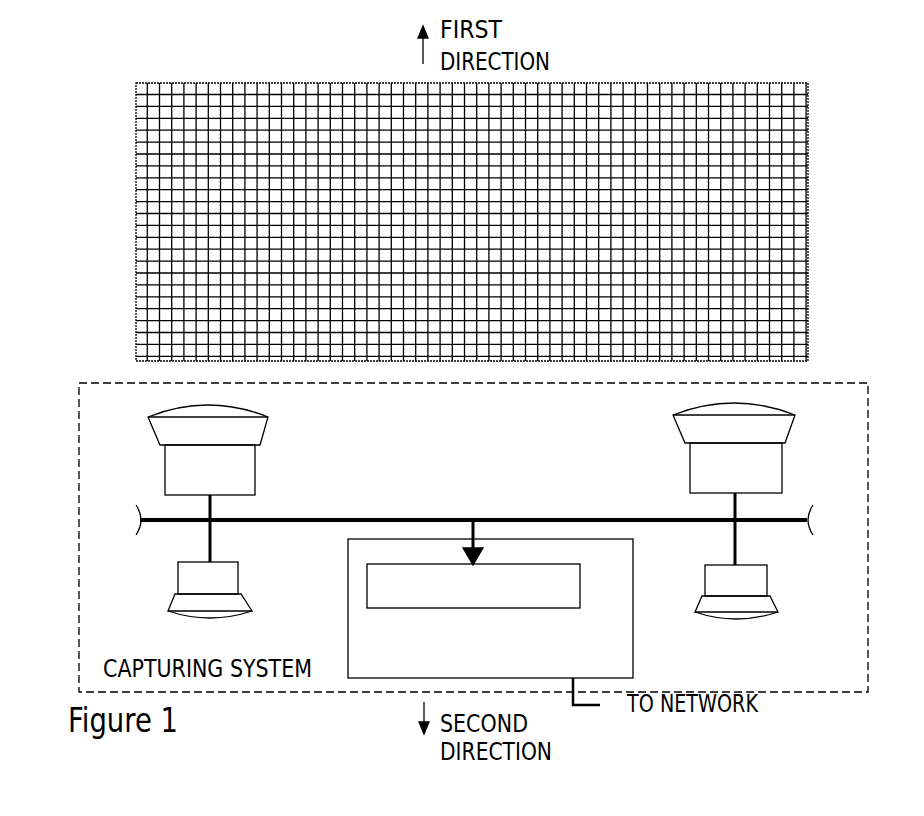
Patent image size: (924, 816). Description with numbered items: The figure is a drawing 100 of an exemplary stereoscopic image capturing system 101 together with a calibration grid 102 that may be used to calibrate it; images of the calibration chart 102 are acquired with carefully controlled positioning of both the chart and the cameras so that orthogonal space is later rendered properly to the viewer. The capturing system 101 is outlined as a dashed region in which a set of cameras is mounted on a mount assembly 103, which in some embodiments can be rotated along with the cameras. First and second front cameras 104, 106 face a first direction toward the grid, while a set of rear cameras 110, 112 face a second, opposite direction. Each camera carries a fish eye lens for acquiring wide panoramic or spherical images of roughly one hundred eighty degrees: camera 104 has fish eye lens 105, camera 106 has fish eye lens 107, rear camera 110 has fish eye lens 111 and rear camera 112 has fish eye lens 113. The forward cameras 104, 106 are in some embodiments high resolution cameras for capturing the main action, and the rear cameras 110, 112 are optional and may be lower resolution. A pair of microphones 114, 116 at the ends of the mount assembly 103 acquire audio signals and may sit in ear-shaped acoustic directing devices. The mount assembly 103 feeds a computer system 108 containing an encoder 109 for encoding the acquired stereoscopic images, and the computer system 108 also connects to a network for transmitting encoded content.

The drawing 100 is at (97, 50).
The stereoscopic image capturing system 101 is at (870, 424).
The calibration grid 102 is at (200, 83).
The mount assembly 103 is at (305, 518).
The first front camera 104 is at (165, 455).
The fish eye lens 105 is at (260, 417).
The second front camera 106 is at (690, 450).
The fish eye lens 107 is at (775, 409).
The computer system 108 is at (633, 572).
The encoder 109 is at (583, 582).
The rear camera 110 is at (240, 581).
The fish eye lens 111 is at (243, 615).
The rear camera 112 is at (768, 582).
The fish eye lens 113 is at (762, 620).
The microphone 114 is at (810, 509).
The microphone 116 is at (137, 530).